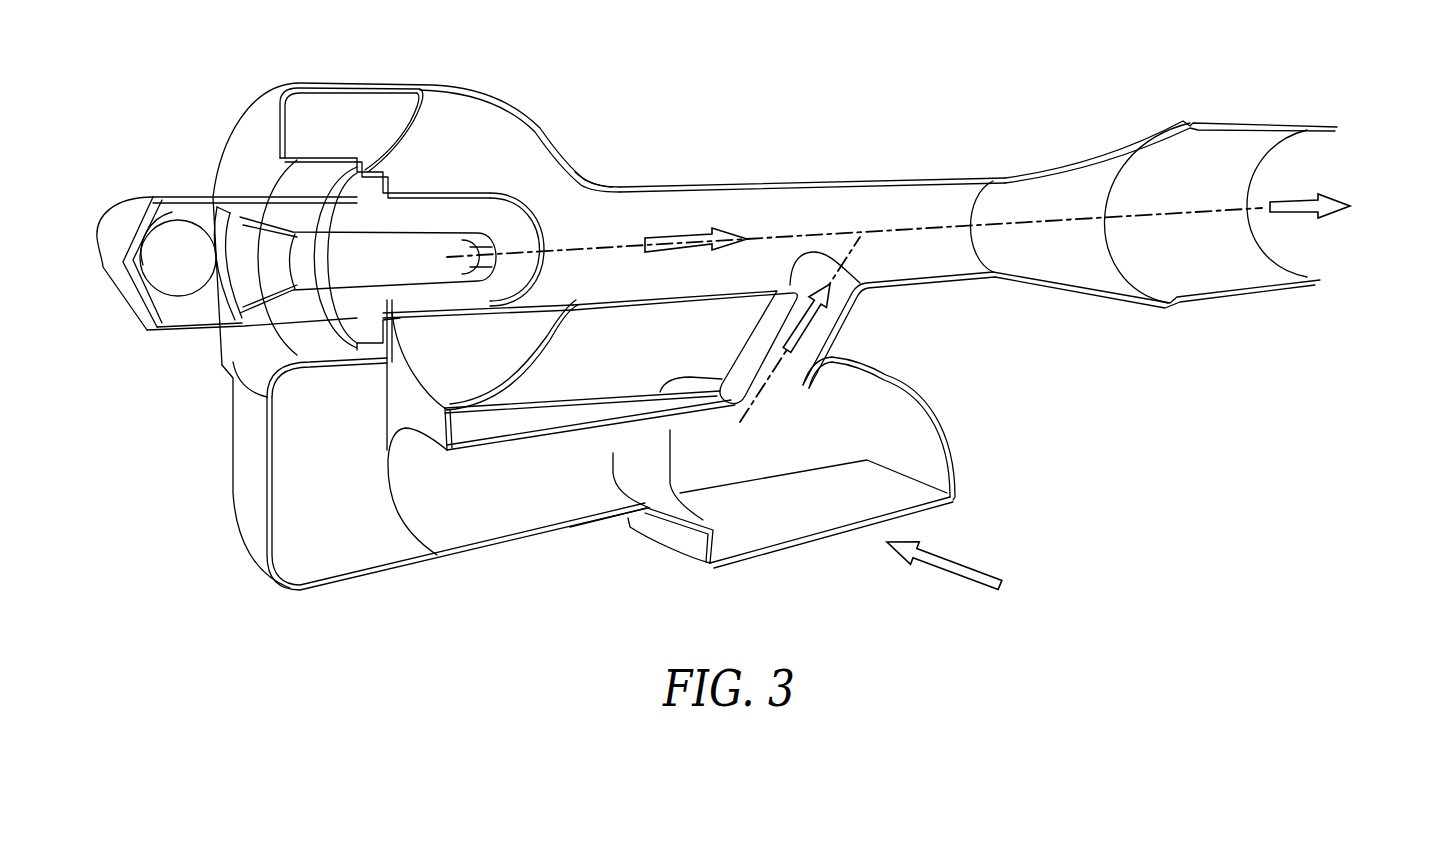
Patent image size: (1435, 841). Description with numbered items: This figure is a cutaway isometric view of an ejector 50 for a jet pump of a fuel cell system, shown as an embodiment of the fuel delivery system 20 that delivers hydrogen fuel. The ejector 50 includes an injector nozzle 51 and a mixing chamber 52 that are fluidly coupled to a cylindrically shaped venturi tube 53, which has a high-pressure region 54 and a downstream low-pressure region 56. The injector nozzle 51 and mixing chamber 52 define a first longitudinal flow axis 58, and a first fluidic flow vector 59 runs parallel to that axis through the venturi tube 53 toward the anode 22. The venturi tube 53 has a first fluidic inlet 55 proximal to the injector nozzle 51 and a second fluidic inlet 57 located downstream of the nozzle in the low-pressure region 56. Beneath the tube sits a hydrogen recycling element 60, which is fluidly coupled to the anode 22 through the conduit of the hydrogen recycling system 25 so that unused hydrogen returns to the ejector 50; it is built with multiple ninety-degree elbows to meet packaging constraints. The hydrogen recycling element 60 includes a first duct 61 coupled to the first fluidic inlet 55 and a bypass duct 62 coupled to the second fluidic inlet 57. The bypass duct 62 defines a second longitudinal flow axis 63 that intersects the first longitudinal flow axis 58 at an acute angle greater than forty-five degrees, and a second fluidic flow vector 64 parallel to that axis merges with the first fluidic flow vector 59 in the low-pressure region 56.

The fuel delivery system 20 is at (110, 182).
The anode 22 is at (1343, 206).
The hydrogen recycling system 25 is at (997, 576).
The ejector 50 is at (815, 218).
The injector nozzle 51 is at (383, 255).
The mixing chamber 52 is at (525, 95).
The venturi tube 53 is at (725, 183).
The high-pressure region 54 is at (572, 162).
The first fluidic inlet 55 is at (407, 372).
The low-pressure region 56 is at (887, 170).
The second fluidic inlet 57 is at (815, 275).
The first longitudinal flow axis 58 is at (694, 222).
The first fluidic flow vector 59 is at (1043, 217).
The hydrogen recycling element 60 is at (631, 412).
The first duct 61 is at (317, 487).
The bypass duct 62 is at (752, 367).
The second longitudinal flow axis 63 is at (757, 415).
The second fluidic flow vector 64 is at (813, 476).